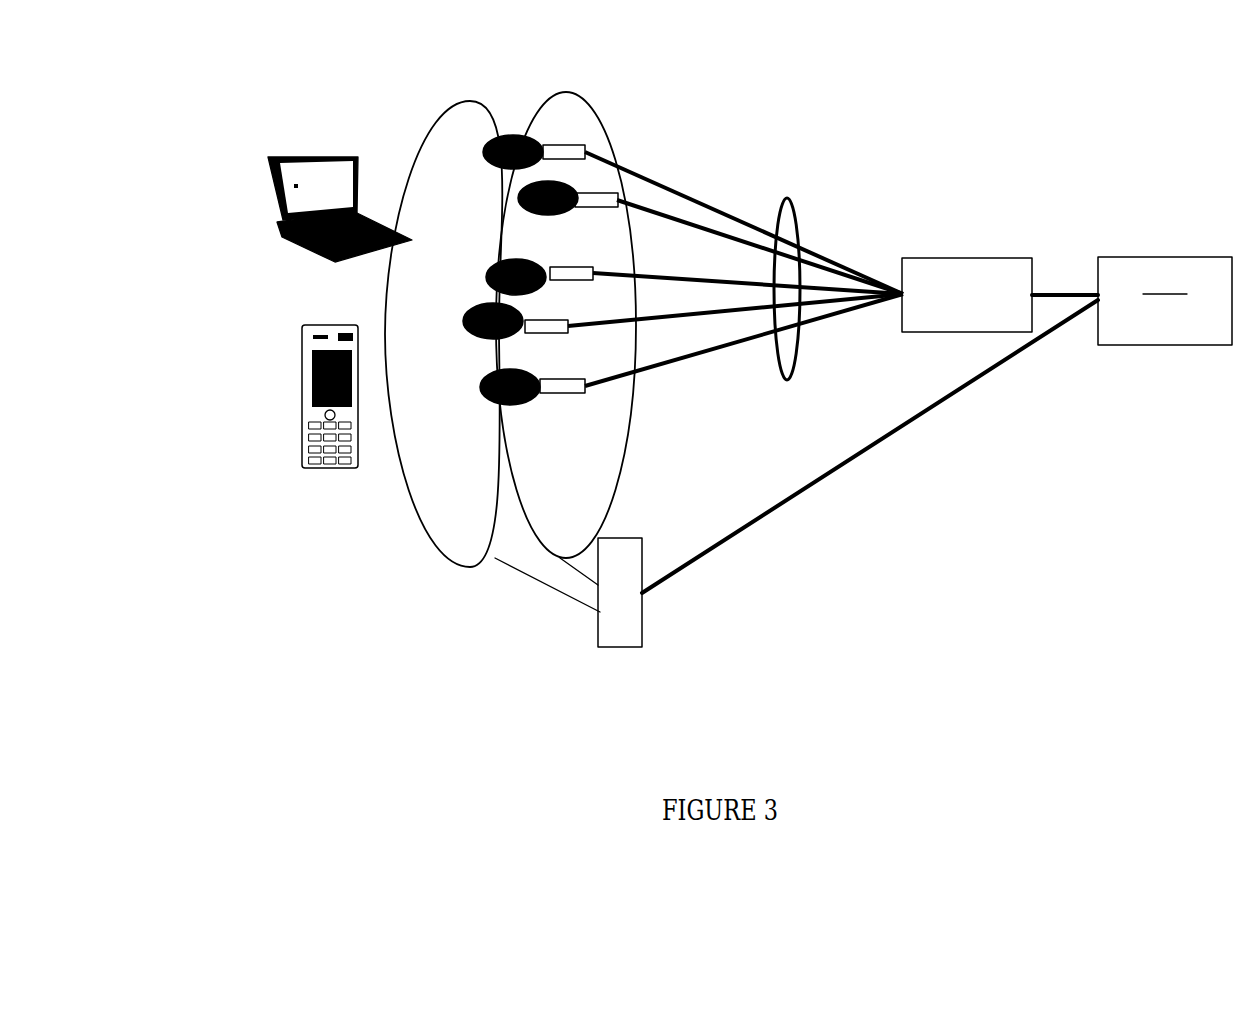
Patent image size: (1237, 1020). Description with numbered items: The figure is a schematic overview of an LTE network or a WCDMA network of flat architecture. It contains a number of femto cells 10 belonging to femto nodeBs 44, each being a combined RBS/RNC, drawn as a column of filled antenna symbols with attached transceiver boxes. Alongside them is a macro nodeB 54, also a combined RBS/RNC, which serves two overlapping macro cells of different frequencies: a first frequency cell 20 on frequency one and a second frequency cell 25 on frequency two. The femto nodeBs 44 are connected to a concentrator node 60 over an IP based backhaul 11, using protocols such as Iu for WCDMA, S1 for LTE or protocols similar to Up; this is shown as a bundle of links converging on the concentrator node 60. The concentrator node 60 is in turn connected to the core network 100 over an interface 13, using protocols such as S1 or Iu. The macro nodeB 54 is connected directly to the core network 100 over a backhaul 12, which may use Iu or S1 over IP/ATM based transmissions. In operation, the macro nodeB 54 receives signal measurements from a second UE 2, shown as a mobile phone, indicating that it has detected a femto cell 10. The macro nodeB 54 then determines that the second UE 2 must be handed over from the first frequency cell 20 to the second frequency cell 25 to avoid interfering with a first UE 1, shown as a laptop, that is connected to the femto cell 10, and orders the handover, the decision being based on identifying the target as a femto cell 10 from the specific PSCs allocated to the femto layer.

The first UE 1 is at (339, 188).
The second UE 2 is at (308, 377).
The femto cell 10 is at (490, 143).
The femto nodeB 44 is at (588, 142).
The IP based backhaul I1 11 is at (790, 215).
The backhaul I2 12 is at (840, 465).
The interface I3 13 is at (1050, 293).
The first frequency cell 20 is at (592, 483).
The second frequency cell 25 is at (432, 518).
The macro nodeB 54 is at (627, 590).
The concentrator node 60 is at (967, 295).
The core network 100 is at (1165, 301).